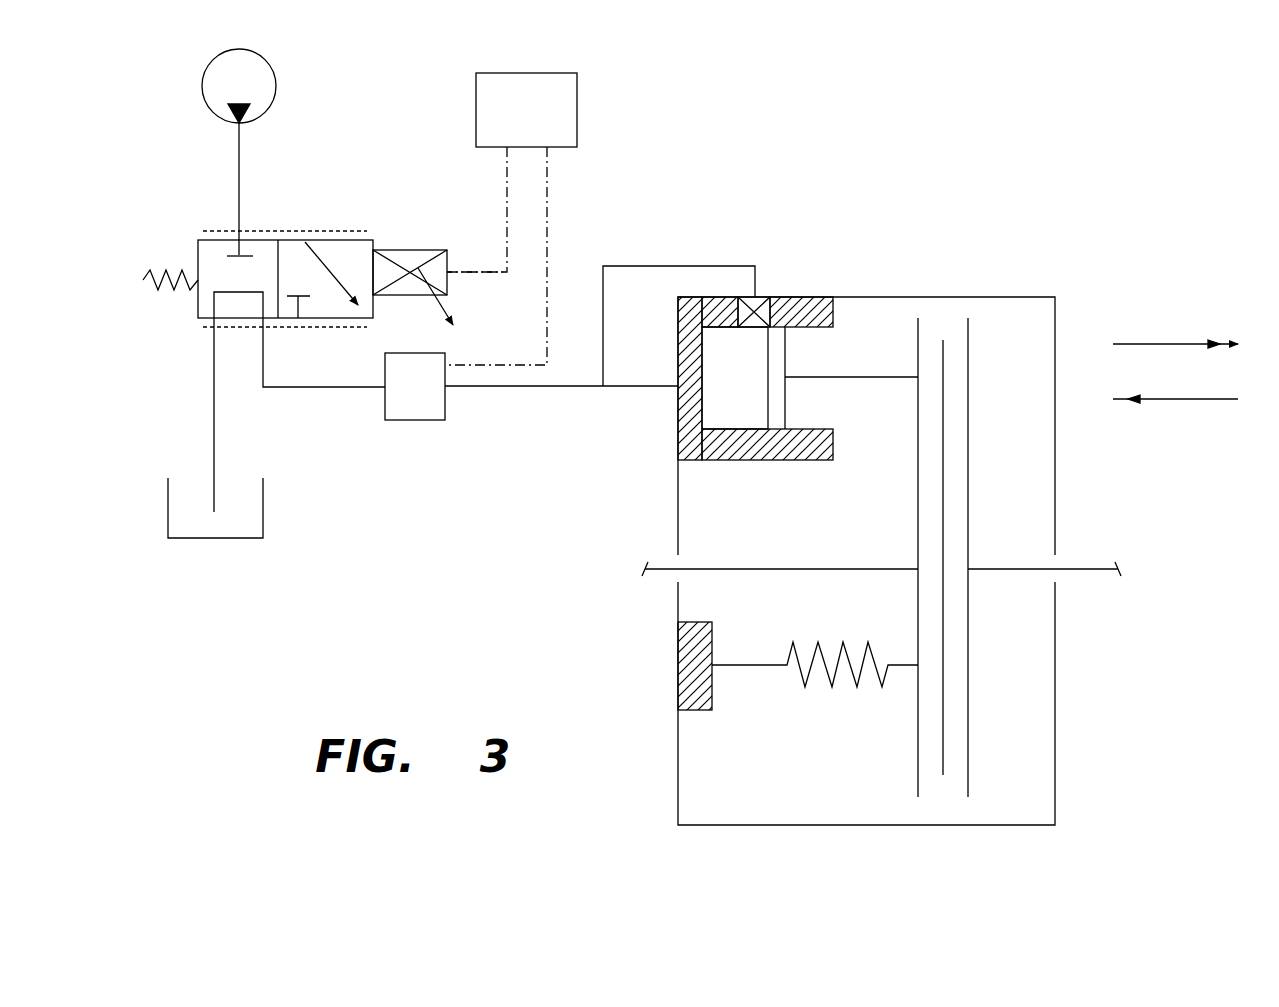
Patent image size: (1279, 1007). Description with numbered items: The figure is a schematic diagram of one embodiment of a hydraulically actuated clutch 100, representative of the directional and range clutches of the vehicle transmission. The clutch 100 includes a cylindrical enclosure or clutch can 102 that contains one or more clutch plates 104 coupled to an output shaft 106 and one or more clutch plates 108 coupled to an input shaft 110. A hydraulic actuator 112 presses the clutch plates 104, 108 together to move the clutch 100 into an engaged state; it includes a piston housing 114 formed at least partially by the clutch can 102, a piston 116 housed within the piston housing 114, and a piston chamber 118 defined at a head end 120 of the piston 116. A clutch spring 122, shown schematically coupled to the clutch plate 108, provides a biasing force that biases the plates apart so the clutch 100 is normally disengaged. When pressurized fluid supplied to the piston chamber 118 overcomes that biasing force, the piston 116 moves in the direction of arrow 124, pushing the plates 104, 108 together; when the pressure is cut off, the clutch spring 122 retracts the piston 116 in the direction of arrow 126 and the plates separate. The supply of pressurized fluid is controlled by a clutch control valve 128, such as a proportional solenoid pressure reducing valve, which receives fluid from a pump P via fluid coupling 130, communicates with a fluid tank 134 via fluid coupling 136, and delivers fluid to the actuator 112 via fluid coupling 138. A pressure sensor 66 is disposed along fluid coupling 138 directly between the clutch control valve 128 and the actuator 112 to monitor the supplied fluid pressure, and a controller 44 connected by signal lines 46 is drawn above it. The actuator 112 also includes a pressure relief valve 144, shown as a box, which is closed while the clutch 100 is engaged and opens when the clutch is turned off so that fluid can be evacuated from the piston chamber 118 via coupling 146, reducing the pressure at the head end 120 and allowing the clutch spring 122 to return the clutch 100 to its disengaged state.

The pump P is at (277, 90).
The controller 44 is at (540, 121).
The signal lines 46 is at (507, 225).
The pressure sensor 66 is at (420, 420).
The hydraulically actuated clutch 100 is at (988, 187).
The clutch can 102 is at (1000, 297).
The clutch plates 104 is at (968, 437).
The output shaft 106 is at (1080, 569).
The clutch plates 108 is at (917, 707).
The input shaft 110 is at (740, 569).
The hydraulic actuator 112 is at (790, 460).
The piston housing 114 is at (678, 512).
The piston 116 is at (787, 390).
The piston chamber 118 is at (751, 381).
The head end 120 is at (770, 407).
The clutch spring 122 is at (797, 672).
The arrow 124 is at (1160, 344).
The arrow 126 is at (1167, 399).
The clutch control valve 128 is at (198, 260).
The fluid coupling 130 is at (242, 192).
The fluid tank 134 is at (263, 512).
The fluid coupling 136 is at (214, 438).
The fluid coupling 138 is at (557, 388).
The pressure relief valve 144 is at (775, 300).
The coupling 146 is at (650, 266).